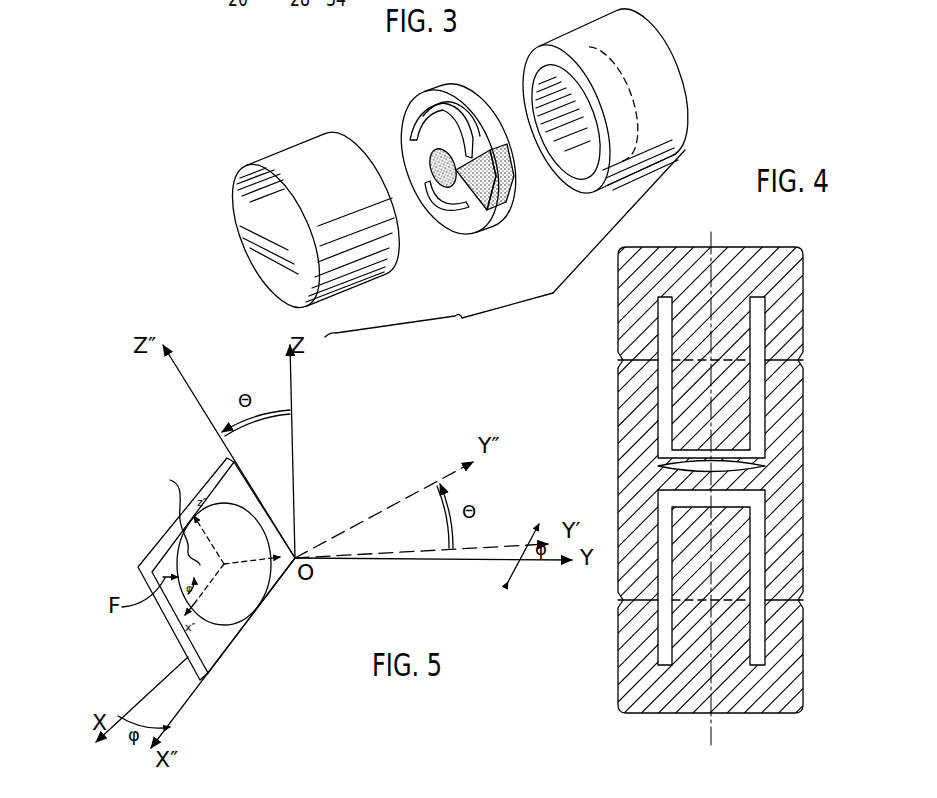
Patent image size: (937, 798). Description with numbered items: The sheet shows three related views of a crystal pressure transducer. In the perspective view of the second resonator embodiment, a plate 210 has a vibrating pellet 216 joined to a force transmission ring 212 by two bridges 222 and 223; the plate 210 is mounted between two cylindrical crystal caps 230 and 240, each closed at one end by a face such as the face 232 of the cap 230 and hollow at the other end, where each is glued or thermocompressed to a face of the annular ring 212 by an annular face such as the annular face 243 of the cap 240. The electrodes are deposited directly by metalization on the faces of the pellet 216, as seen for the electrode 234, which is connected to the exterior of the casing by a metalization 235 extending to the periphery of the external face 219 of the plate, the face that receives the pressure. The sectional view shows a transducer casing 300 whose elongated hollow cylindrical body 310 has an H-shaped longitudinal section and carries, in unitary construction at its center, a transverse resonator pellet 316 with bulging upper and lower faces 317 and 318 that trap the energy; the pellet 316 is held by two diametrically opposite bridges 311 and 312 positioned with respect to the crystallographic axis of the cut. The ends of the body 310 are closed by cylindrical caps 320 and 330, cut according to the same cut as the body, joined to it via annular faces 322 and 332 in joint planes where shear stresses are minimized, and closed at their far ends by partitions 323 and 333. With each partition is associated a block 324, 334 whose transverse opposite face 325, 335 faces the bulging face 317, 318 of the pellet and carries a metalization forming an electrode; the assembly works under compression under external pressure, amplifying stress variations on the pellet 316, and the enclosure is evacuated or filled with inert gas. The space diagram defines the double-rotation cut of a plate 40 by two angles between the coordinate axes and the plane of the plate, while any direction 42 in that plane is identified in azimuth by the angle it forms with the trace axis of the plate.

In FIG. 3, the plate 210 is at (458, 165).
In FIG. 3, the force transmission ring 212 is at (463, 236).
In FIG. 3, the vibrating pellet 216 is at (421, 128).
In FIG. 3, the external face 219 is at (446, 98).
In FIG. 3, the bridge 222 is at (400, 162).
In FIG. 3, the bridge 223 is at (480, 158).
In FIG. 3, the crystal cap 230 is at (353, 262).
In FIG. 3, the face 232 is at (250, 211).
In FIG. 3, the electrode 234 is at (445, 176).
In FIG. 3, the metalization 235 is at (500, 187).
In FIG. 3, the crystal cap 240 is at (672, 97).
In FIG. 3, the annular face 243 is at (528, 65).
In FIG. 4, the transducer casing 300 is at (597, 672).
In FIG. 4, the cylindrical body 310 is at (760, 545).
In FIG. 4, the bridge 311 is at (672, 465).
In FIG. 4, the bridge 312 is at (798, 459).
In FIG. 4, the resonator pellet 316 is at (768, 432).
In FIG. 4, the upper face 317 is at (703, 455).
In FIG. 4, the lower face 318 is at (660, 490).
In FIG. 4, the cap 320 is at (785, 293).
In FIG. 4, the annular face 322 is at (622, 362).
In FIG. 4, the partition 323 is at (707, 262).
In FIG. 4, the block 324 is at (733, 328).
In FIG. 4, the transverse opposite face 325 is at (752, 441).
In FIG. 4, the cap 330 is at (778, 677).
In FIG. 4, the annular face 332 is at (637, 607).
In FIG. 4, the partition 333 is at (683, 693).
In FIG. 4, the block 334 is at (733, 630).
In FIG. 4, the transverse opposite face 335 is at (763, 482).
In FIG. 5, the plate 40 is at (160, 548).
In FIG. 5, the direction 42 is at (171, 512).